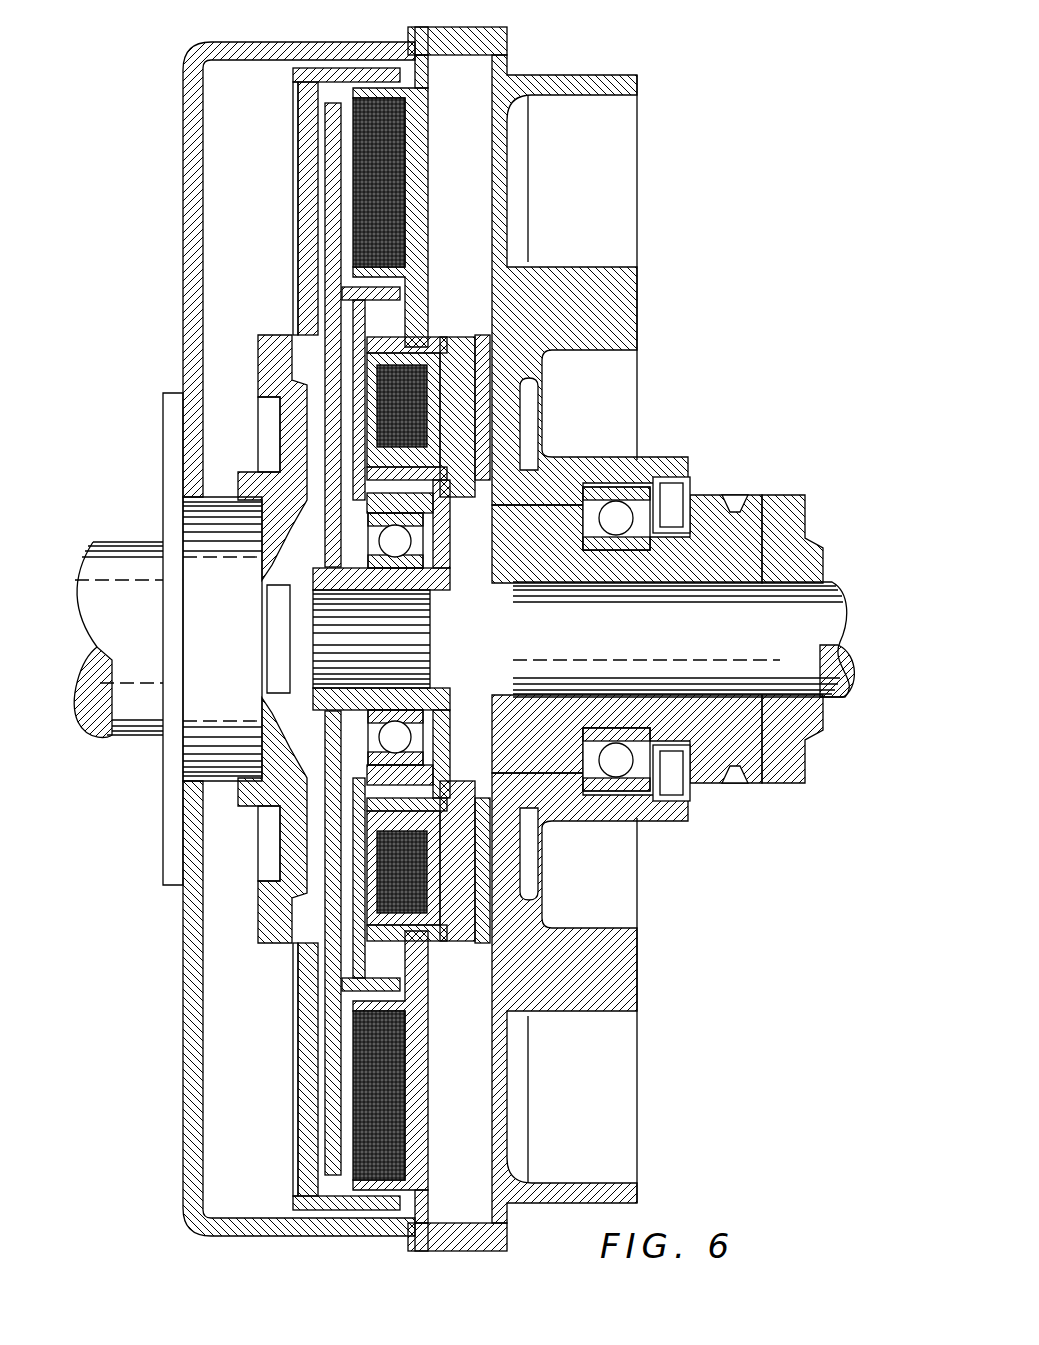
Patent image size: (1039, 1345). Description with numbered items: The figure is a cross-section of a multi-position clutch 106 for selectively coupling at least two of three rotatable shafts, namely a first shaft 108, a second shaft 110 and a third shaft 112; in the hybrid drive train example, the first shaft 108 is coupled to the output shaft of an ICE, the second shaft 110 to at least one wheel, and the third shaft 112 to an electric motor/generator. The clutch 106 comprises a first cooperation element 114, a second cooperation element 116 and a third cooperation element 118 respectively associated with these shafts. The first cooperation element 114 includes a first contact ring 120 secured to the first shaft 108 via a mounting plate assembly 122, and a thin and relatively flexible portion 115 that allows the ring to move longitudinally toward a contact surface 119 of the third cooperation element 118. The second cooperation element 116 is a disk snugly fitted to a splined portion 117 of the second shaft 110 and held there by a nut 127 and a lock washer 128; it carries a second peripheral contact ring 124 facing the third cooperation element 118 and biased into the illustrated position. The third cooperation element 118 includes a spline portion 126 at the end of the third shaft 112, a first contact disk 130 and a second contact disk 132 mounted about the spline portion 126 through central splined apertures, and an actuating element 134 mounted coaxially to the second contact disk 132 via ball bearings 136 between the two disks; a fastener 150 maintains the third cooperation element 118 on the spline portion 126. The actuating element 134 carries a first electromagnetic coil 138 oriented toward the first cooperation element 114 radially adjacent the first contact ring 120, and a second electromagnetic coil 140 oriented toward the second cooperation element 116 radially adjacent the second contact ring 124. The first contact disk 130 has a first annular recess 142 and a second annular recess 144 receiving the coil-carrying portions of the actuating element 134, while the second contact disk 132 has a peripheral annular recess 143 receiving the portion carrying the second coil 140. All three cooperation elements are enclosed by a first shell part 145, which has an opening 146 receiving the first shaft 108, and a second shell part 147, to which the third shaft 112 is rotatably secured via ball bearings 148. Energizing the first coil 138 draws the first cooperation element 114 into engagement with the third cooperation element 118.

The multi-position clutch 106 is at (748, 152).
The first shaft 108 is at (120, 560).
The second shaft 110 is at (763, 540).
The third shaft 112 is at (780, 650).
The first cooperation element 114 is at (287, 123).
The thin and relatively flexible portion 115 is at (352, 340).
The second cooperation element 116 is at (543, 387).
The splined portion 117 is at (640, 462).
The third cooperation element 118 is at (445, 962).
The contact surface 119 is at (315, 130).
The first contact ring 120 is at (296, 74).
The mounting plate assembly 122 is at (282, 945).
The second peripheral contact ring 124 is at (520, 350).
The spline portion 126 is at (350, 655).
The nut 127 is at (523, 443).
The lock washer 128 is at (577, 467).
The first contact disk 130 is at (425, 62).
The second contact disk 132 is at (433, 337).
The actuating element 134 is at (503, 128).
The ball bearings 136 is at (393, 540).
The first electromagnetic coil 138 is at (370, 170).
The second electromagnetic coil 140 is at (482, 400).
The first annular recess 142 is at (345, 227).
The peripheral annular recess 143 is at (526, 410).
The second annular recess 144 is at (345, 330).
The first shell part 145 is at (195, 95).
The opening 146 is at (178, 510).
The second shell part 147 is at (637, 90).
The ball bearings 148 is at (622, 512).
The fastener 150 is at (267, 647).